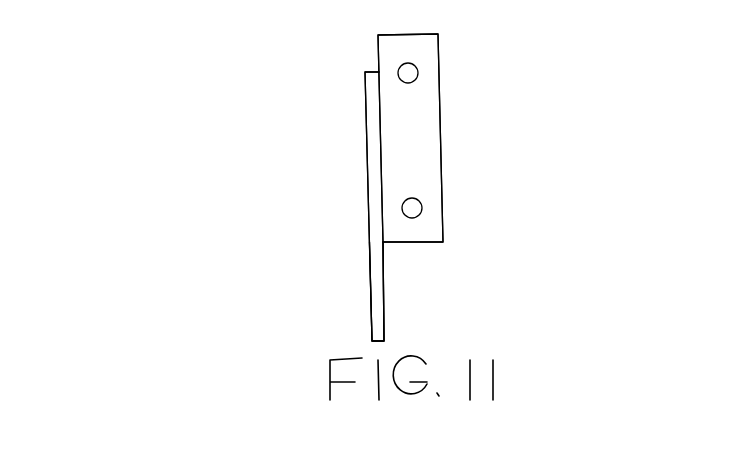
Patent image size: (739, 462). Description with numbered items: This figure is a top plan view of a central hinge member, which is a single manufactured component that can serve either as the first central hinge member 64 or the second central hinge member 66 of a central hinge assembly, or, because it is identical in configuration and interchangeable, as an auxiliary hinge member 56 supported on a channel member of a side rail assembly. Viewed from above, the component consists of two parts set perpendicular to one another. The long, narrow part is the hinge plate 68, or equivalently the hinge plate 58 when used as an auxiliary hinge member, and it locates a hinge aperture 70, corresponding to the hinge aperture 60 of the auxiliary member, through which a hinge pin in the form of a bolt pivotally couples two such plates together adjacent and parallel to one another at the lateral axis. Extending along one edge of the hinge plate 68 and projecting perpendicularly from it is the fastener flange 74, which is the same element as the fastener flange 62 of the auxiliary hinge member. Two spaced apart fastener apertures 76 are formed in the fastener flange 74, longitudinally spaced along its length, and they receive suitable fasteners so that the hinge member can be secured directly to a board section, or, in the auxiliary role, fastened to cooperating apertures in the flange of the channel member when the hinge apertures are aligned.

The auxiliary hinge member 56 is at (262, 186).
The first central hinge member 64 is at (262, 186).
The second central hinge member 66 is at (276, 76).
The hinge plate 58 is at (294, 206).
The hinge plate 68 is at (370, 212).
The hinge aperture 60 is at (290, 291).
The hinge aperture 70 is at (377, 284).
The fastener flange 62 is at (492, 138).
The fastener flange 74 is at (430, 132).
The fastener apertures 76 is at (418, 69).